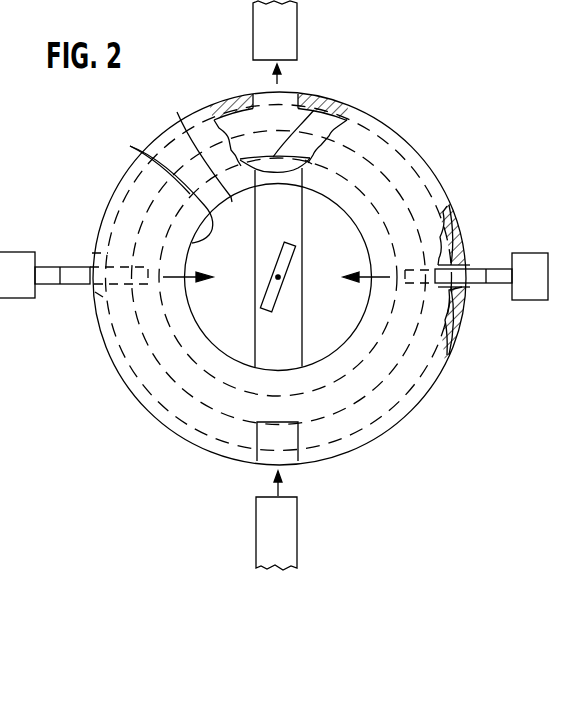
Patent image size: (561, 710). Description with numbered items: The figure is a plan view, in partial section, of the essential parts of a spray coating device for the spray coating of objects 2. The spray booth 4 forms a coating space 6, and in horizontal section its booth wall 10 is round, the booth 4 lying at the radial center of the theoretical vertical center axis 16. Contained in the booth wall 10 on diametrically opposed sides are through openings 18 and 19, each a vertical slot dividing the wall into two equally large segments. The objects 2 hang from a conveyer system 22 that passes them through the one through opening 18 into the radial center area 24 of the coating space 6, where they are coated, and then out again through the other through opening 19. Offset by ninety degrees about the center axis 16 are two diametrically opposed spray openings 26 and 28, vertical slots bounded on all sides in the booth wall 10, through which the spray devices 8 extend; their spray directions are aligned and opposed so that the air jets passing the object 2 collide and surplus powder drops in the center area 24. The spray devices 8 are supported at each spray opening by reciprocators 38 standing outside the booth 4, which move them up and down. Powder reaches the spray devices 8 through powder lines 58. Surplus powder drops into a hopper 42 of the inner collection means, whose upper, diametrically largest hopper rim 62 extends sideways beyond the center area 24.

The objects 2 is at (292, 256).
The spray booth 4 is at (410, 138).
The coating space 6 is at (177, 113).
The spray devices 8 is at (71, 278).
The booth wall 10 is at (322, 110).
The center axis 16 is at (276, 278).
The through opening 18 is at (267, 452).
The through opening 19 is at (266, 92).
The conveyer system 22 is at (263, 17).
The center area 24 is at (138, 138).
The spray opening 26 is at (468, 265).
The spray opening 28 is at (94, 262).
The reciprocator 38 is at (19, 288).
The hopper 42 is at (314, 95).
The powder lines 58 is at (560, 6).
The hopper rim 62 is at (308, 158).